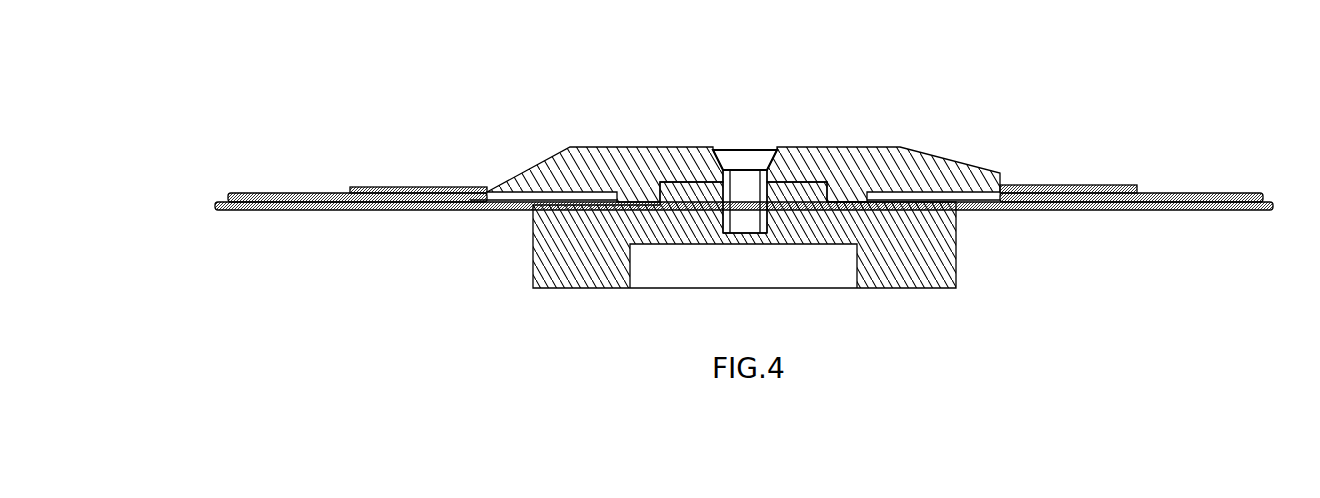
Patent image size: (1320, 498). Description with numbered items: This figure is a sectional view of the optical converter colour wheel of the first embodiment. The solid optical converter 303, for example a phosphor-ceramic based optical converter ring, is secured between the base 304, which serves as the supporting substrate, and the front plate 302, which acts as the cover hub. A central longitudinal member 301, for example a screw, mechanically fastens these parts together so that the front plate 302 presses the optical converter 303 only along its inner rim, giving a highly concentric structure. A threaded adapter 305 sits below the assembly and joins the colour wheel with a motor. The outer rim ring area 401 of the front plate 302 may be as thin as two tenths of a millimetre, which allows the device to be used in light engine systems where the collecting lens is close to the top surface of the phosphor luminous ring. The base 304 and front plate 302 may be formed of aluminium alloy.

The central longitudinal member 301 is at (734, 138).
The front plate 302 is at (547, 153).
The solid optical converter 303 is at (272, 184).
The base 304 is at (1175, 213).
The threaded adapter 305 is at (533, 236).
The outer rim ring area 401 is at (1077, 187).